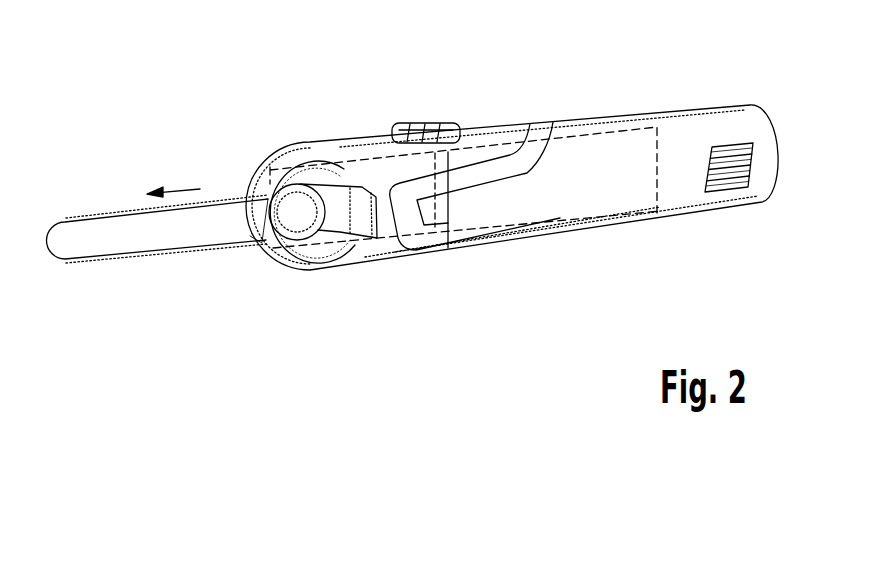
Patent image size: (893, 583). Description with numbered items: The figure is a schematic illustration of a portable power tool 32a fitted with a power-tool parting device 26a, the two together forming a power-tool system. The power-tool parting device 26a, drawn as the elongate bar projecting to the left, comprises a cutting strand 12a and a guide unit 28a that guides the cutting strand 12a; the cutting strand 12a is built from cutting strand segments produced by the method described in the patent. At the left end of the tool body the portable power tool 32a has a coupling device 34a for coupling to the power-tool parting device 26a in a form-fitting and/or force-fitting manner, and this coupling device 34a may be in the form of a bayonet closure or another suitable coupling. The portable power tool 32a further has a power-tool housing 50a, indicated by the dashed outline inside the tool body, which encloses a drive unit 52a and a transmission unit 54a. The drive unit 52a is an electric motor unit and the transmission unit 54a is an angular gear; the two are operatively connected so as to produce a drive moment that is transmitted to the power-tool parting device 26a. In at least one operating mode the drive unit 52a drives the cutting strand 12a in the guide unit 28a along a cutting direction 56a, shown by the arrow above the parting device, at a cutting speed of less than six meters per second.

The cutting strand 12a is at (90, 260).
The power-tool parting device 26a is at (128, 152).
The guide unit 28a is at (160, 243).
The portable power tool 32a is at (682, 57).
The coupling device 34a is at (302, 297).
The power-tool housing 50a is at (590, 127).
The drive unit 52a is at (507, 238).
The transmission unit 54a is at (392, 232).
The cutting direction 56a is at (178, 190).